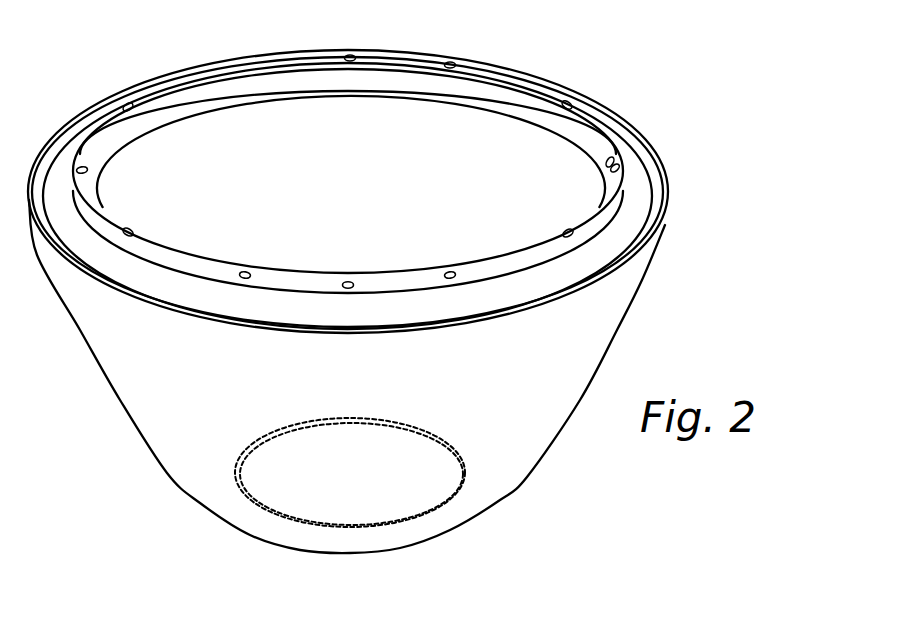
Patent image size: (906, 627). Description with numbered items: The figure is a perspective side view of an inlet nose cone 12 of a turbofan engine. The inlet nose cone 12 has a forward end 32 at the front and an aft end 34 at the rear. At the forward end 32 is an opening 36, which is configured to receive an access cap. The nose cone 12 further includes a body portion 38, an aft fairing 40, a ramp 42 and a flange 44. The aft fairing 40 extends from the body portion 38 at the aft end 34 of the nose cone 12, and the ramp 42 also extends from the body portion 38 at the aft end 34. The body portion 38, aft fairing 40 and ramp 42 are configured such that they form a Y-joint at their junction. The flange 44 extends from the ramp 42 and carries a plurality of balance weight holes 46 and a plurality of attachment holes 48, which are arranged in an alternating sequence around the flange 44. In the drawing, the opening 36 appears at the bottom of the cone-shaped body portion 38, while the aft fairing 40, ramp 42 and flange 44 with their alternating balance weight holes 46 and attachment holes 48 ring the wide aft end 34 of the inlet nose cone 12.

The inlet nose cone 12 is at (748, 42).
The forward end 32 is at (518, 524).
The aft end 34 is at (534, 49).
The opening 36 is at (297, 493).
The body portion 38 is at (613, 300).
The aft fairing 40 is at (53, 160).
The ramp 42 is at (637, 190).
The flange 44 is at (603, 133).
The balance weight holes 46 is at (129, 108).
The attachment holes 48 is at (84, 171).